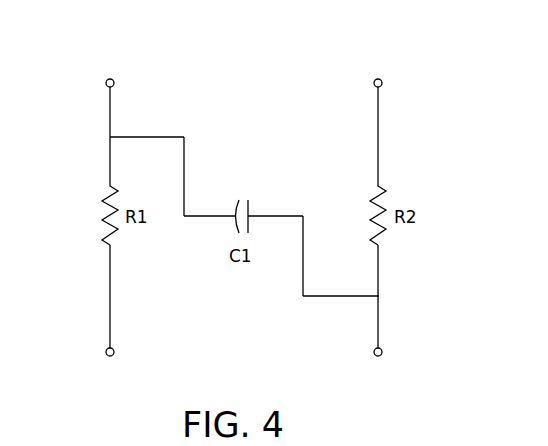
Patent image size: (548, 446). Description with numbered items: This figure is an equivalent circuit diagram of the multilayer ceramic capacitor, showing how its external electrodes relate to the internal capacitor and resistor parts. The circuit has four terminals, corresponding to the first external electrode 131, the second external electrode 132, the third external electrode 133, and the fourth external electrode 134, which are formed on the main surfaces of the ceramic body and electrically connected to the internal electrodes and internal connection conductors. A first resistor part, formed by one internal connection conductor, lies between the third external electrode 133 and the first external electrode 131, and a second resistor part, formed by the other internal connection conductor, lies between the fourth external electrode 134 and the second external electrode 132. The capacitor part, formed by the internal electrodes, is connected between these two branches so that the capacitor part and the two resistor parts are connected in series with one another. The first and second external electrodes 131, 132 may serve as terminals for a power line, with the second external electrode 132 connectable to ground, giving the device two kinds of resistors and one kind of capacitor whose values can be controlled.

The first external electrode 131 is at (111, 366).
The second external electrode 132 is at (380, 366).
The third external electrode 133 is at (111, 66).
The fourth external electrode 134 is at (380, 66).